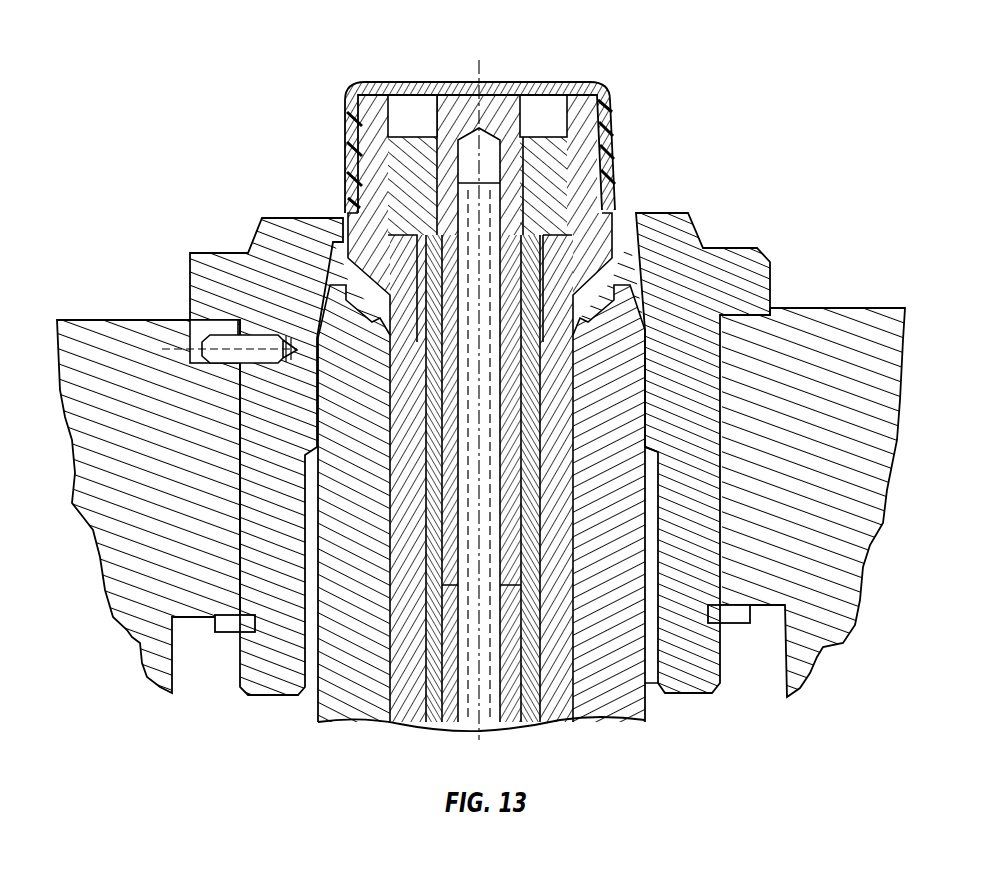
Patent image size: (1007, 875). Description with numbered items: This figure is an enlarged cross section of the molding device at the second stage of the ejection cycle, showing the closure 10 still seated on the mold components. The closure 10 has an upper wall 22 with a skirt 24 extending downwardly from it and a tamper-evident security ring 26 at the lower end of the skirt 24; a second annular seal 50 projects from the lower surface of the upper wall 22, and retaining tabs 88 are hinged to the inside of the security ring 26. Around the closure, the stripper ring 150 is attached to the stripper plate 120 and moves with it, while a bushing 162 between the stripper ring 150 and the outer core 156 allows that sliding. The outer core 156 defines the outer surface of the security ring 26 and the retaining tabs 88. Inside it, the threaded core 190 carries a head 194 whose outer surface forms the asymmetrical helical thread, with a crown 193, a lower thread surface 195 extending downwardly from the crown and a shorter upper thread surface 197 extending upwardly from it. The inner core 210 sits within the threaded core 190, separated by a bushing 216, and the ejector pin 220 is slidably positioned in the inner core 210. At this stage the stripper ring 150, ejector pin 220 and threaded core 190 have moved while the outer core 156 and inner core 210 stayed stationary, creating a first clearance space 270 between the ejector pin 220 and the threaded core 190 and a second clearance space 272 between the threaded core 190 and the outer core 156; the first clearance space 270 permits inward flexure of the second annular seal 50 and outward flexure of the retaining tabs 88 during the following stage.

The closure 10 is at (488, 72).
The upper wall 22 is at (541, 96).
The skirt 24 is at (343, 108).
The tamper-evident security ring 26 is at (343, 216).
The second annular seal 50 is at (398, 112).
The retaining tabs 88 is at (330, 265).
The stripper plate 120 is at (828, 312).
The stripper ring 150 is at (703, 250).
The outer core 156 is at (345, 722).
The bushing 162 is at (653, 690).
The threaded core 190 is at (556, 714).
The crown 193 is at (606, 150).
The head 194 is at (603, 102).
The lower thread surface 195 is at (603, 163).
The upper thread surface 197 is at (604, 126).
The inner core 210 is at (432, 724).
The bushing 216 is at (390, 356).
The ejector pin 220 is at (500, 728).
The first clearance space 270 is at (553, 108).
The second clearance space 272 is at (620, 256).